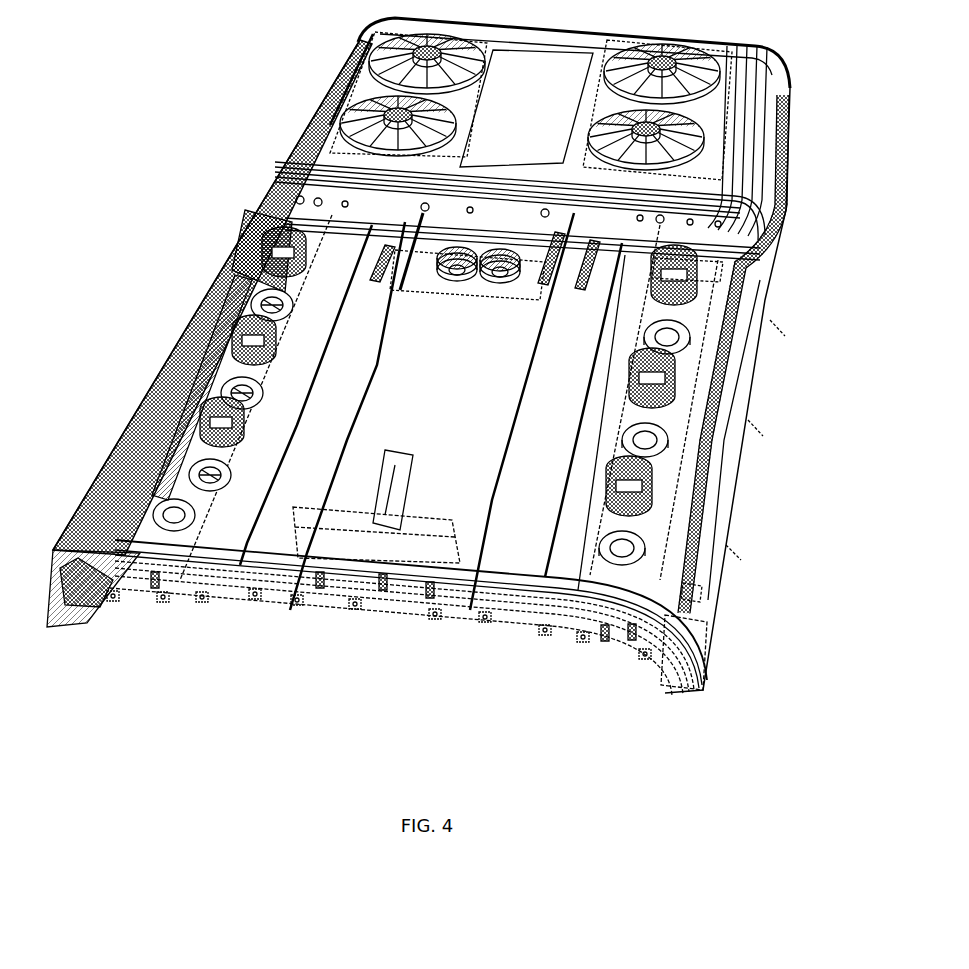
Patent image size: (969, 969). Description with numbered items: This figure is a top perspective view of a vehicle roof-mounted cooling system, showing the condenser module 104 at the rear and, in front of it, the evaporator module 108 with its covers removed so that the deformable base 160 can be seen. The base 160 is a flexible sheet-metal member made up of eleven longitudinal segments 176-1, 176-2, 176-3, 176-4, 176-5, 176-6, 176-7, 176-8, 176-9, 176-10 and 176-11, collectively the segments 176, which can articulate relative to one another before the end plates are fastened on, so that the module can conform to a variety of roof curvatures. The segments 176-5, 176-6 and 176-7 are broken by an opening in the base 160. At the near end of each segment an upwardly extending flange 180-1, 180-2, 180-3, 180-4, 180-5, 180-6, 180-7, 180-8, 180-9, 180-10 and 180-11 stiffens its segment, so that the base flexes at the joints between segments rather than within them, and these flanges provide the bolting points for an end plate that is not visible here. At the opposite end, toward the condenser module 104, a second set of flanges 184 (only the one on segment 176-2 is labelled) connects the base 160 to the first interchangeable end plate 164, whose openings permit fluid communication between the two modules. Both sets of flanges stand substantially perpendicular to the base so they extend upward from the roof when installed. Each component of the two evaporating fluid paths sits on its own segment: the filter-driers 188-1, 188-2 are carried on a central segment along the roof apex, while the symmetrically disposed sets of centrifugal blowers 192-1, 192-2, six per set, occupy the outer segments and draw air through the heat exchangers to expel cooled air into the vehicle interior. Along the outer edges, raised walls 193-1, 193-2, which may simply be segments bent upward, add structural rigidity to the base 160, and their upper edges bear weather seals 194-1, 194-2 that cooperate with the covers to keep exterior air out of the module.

The condenser module 104 is at (313, 101).
The evaporator module 108 is at (188, 336).
The base 160 is at (363, 387).
The first interchangeable end plate 164 is at (322, 185).
The longitudinal segments 176 is at (489, 233).
The longitudinal segment 176-1 is at (124, 585).
The longitudinal segment 176-2 is at (155, 585).
The longitudinal segment 176-3 is at (283, 417).
The longitudinal segment 176-4 is at (277, 485).
The longitudinal segment 176-5 is at (320, 585).
The longitudinal segment 176-6 is at (383, 587).
The longitudinal segment 176-7 is at (430, 595).
The longitudinal segment 176-8 is at (507, 495).
The longitudinal segment 176-9 is at (585, 453).
The longitudinal segment 176-10 is at (605, 638).
The longitudinal segment 176-11 is at (632, 637).
The flange 180-1 is at (113, 600).
The flange 180-2 is at (163, 600).
The flange 180-3 is at (202, 600).
The flange 180-4 is at (255, 597).
The flange 180-5 is at (297, 603).
The flange 180-6 is at (355, 607).
The flange 180-7 is at (435, 617).
The flange 180-8 is at (485, 620).
The flange 180-9 is at (545, 633).
The flange 180-10 is at (583, 640).
The flange 180-11 is at (645, 657).
The second set of flanges 184 is at (335, 235).
The filter-drier 188-1 is at (500, 285).
The filter-drier 188-2 is at (458, 278).
The set of centrifugal blowers 192-1 is at (645, 542).
The set of centrifugal blowers 192-2 is at (268, 290).
The raised wall 193-1 is at (696, 597).
The raised wall 193-2 is at (148, 465).
The weather seal 194-1 is at (736, 362).
The weather seal 194-2 is at (150, 397).